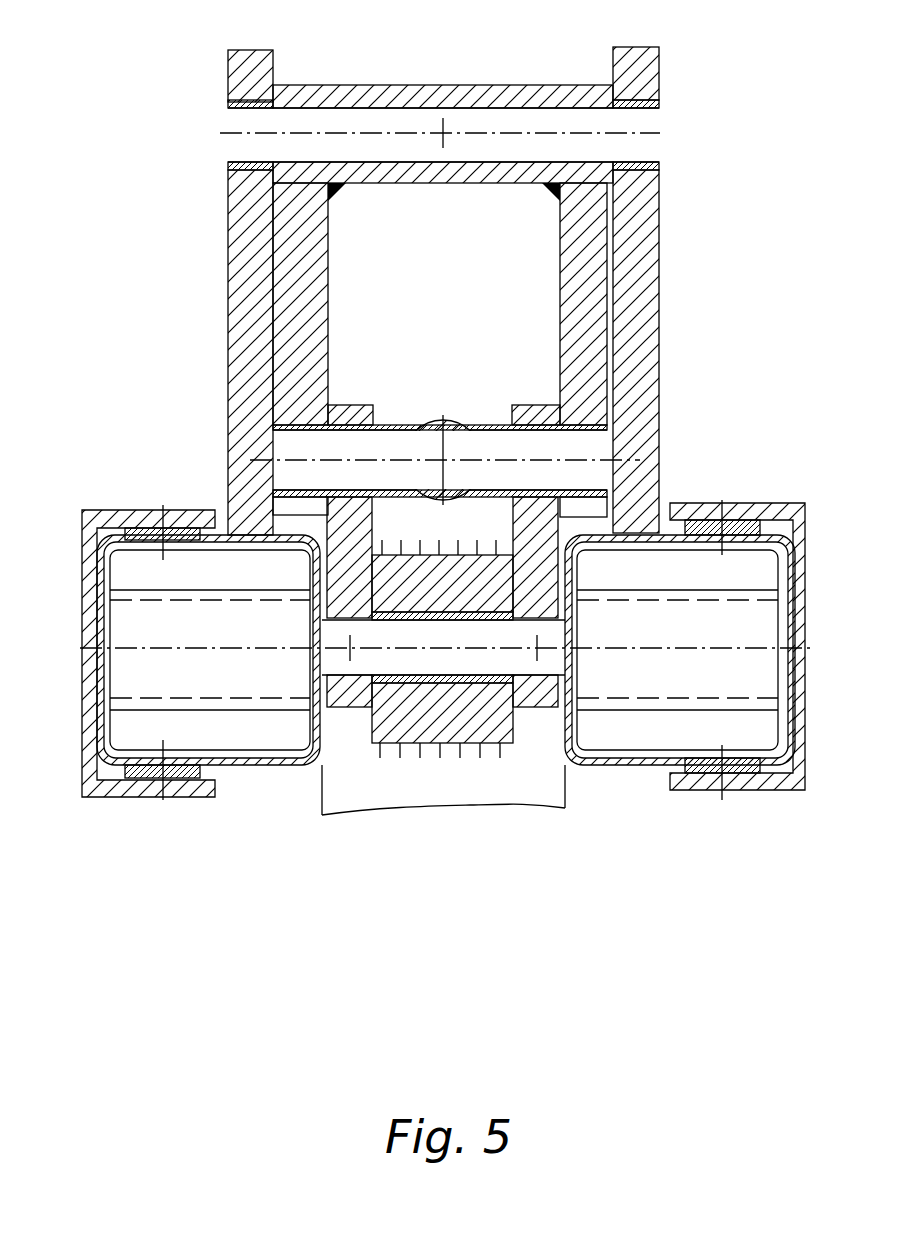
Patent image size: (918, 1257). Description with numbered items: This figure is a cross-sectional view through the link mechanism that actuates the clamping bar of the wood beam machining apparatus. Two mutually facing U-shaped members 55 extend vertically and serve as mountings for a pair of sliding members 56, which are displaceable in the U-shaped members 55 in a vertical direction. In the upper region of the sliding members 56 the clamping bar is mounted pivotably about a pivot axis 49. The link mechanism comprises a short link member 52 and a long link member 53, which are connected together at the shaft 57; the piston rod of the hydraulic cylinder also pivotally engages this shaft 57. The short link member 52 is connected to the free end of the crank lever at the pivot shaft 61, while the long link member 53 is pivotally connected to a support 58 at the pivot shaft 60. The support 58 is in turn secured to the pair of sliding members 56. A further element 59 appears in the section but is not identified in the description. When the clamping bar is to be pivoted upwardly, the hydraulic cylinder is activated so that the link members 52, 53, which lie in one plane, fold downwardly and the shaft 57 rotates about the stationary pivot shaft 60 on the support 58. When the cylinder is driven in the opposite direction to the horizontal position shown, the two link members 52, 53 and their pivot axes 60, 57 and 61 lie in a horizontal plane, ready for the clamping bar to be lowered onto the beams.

The pivot axis 49 is at (155, 633).
The short link member 52 is at (543, 557).
The long link member 53 is at (580, 237).
The U-shaped member 55 is at (197, 520).
The sliding member 56 is at (262, 757).
The shaft 57 is at (545, 445).
The support 58 is at (252, 230).
The tube 59 is at (405, 95).
The pivot shaft 60 is at (627, 119).
The pivot shaft 61 is at (392, 637).